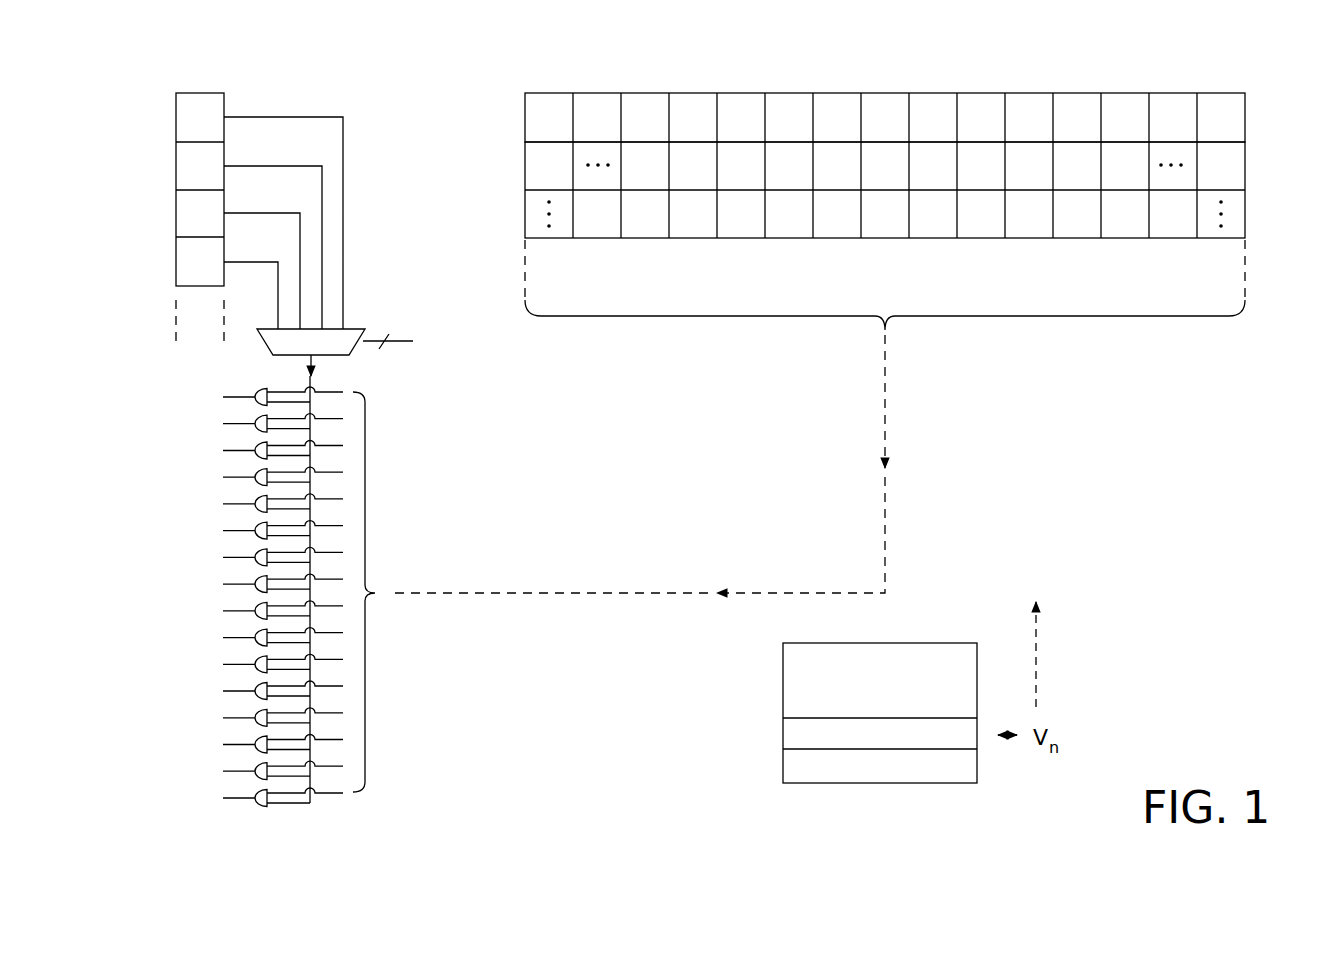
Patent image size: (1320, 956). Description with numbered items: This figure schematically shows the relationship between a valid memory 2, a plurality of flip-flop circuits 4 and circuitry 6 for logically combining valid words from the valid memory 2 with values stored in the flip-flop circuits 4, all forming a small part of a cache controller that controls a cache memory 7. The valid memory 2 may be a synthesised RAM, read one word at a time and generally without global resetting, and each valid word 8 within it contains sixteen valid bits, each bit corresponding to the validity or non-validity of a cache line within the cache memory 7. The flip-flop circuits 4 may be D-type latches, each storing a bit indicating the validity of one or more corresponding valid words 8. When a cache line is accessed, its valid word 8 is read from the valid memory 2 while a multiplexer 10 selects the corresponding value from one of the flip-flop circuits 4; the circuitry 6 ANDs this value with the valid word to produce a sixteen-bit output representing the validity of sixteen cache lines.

The flip-flop circuits 4 is at (190, 93).
The multiplexer 10 is at (270, 351).
The circuitry for logically combining 6 is at (285, 815).
The valid word 8 is at (1245, 108).
The valid memory 2 is at (1245, 205).
The cache memory 7 is at (783, 657).